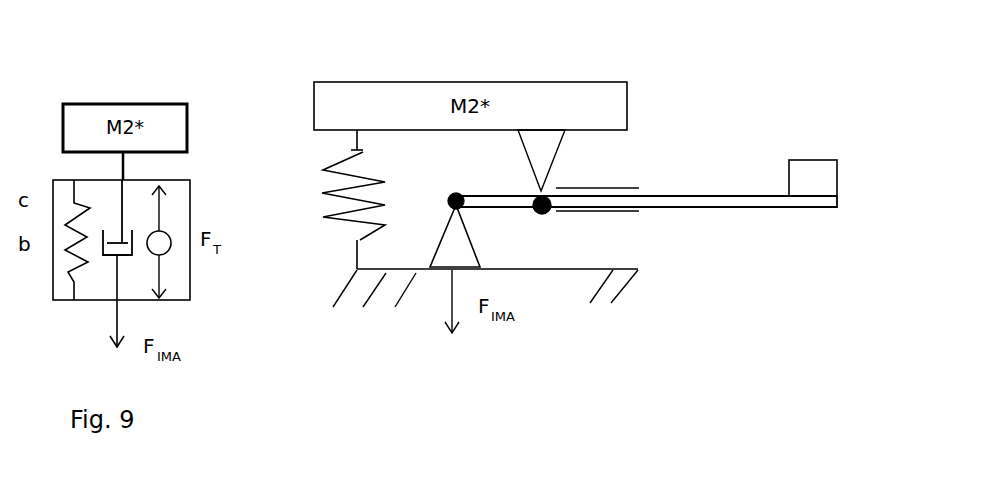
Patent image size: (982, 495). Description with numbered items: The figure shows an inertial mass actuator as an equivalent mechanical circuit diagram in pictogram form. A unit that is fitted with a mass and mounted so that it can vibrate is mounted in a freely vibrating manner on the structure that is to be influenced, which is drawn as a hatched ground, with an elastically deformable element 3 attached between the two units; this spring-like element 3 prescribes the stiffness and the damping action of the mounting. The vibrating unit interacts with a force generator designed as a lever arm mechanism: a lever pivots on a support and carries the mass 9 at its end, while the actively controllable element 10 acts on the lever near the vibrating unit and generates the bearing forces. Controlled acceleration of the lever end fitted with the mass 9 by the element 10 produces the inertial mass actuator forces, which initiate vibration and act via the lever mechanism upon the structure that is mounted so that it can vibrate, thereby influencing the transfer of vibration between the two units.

The elastically deformable element 3 is at (322, 182).
The mass 9 is at (816, 160).
The actively controllable element 10 is at (600, 188).